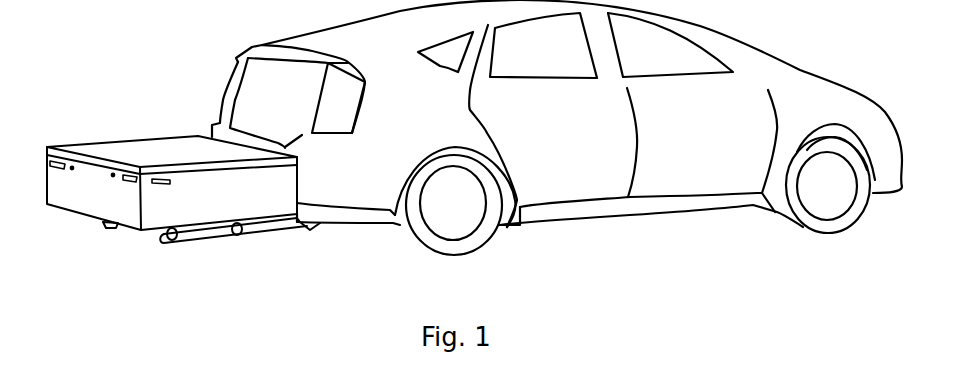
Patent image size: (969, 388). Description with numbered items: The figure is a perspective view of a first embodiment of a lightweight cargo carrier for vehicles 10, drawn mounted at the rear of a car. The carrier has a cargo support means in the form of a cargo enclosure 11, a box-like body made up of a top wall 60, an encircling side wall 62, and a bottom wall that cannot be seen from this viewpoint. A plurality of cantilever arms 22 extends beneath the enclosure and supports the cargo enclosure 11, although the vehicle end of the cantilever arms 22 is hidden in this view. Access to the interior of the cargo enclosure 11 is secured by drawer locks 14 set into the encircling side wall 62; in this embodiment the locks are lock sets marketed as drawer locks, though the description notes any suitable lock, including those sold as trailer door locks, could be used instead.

The lightweight cargo carrier for vehicles 10 is at (152, 85).
The cargo enclosure 11 is at (179, 134).
The drawer locks 14 is at (73, 172).
The cantilever arms 22 is at (108, 226).
The top wall 60 is at (106, 148).
The encircling side wall 62 is at (57, 183).